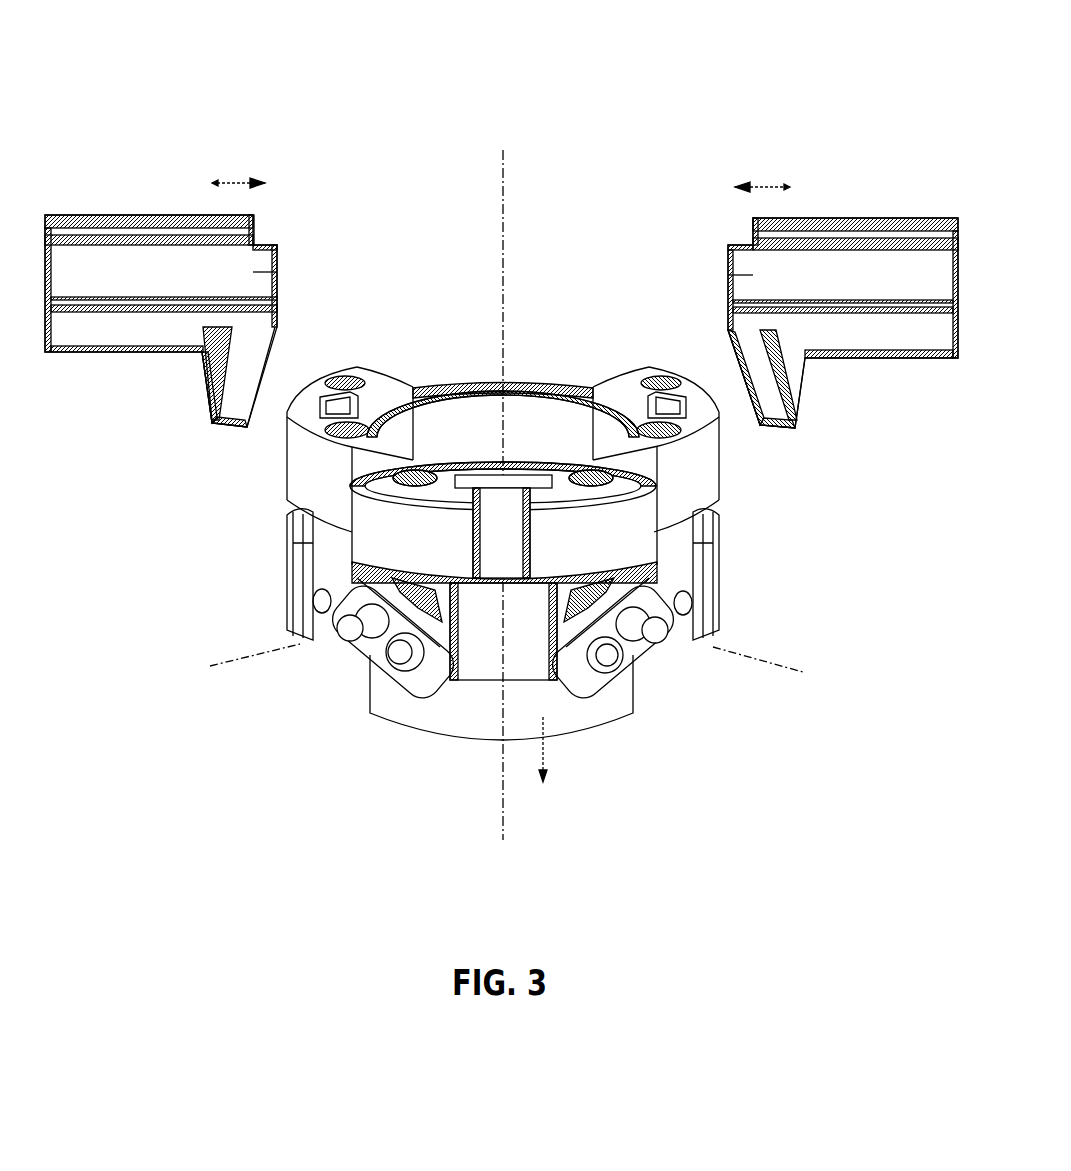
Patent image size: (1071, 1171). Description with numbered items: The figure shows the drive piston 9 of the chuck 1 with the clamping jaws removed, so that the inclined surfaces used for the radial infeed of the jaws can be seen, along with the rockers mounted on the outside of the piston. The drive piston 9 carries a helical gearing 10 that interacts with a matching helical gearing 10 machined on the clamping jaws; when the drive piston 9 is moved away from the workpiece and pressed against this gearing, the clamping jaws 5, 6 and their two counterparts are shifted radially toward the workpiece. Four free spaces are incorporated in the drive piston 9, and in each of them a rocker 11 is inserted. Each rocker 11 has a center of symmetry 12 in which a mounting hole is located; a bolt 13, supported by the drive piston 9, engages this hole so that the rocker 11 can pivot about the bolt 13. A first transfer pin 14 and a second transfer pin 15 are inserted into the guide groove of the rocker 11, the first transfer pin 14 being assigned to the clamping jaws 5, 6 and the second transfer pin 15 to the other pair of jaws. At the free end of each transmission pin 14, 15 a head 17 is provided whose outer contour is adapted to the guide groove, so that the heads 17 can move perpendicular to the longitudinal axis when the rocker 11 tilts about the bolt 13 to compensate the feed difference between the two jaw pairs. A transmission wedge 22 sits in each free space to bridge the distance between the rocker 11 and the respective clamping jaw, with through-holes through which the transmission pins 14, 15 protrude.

The chuck 1 is at (686, 68).
The clamping jaw 5 is at (135, 262).
The clamping jaw 6 is at (897, 265).
The drive piston 9 is at (482, 720).
The helical gearing 10 is at (243, 397).
The rocker 11 is at (375, 660).
The center of symmetry 12 is at (700, 640).
The bolt 13 is at (645, 650).
The first transfer pin 14 is at (405, 655).
The second transfer pin 15 is at (570, 600).
The head 17 is at (367, 676).
The transmission wedge 22 is at (403, 535).